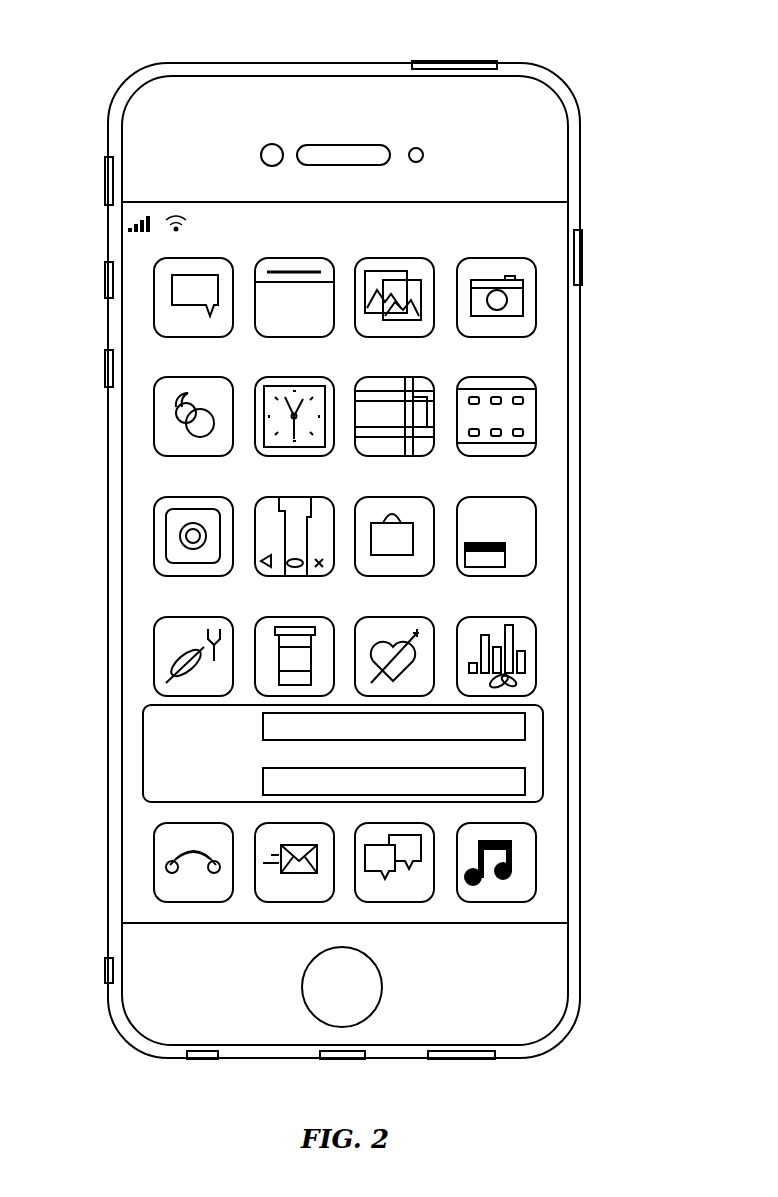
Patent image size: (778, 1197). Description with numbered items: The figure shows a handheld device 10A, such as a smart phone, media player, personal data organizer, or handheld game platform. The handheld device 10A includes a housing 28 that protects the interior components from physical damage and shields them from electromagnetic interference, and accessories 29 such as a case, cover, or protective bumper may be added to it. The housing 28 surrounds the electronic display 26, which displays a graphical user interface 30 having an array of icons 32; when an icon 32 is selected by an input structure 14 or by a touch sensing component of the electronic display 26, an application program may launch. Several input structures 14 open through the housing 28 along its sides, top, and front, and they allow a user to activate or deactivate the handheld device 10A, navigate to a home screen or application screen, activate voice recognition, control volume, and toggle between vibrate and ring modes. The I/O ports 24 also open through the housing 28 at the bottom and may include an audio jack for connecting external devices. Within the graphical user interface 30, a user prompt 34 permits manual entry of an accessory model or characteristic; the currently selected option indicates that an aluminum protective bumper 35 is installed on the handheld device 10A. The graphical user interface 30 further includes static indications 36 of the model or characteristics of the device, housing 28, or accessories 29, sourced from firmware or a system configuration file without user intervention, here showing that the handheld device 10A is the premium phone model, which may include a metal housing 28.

The handheld device 10A is at (115, 63).
The input structures 14 is at (452, 61).
The I/O ports 24 is at (200, 1062).
The electronic display 26 is at (346, 201).
The housing 28 is at (582, 158).
The accessories 29 is at (389, 560).
The aluminum protective bumper 35 is at (582, 600).
The graphical user interface 30 is at (541, 336).
The icons 32 is at (294, 278).
The user prompt 34 is at (526, 727).
The static indications 36 is at (526, 780).